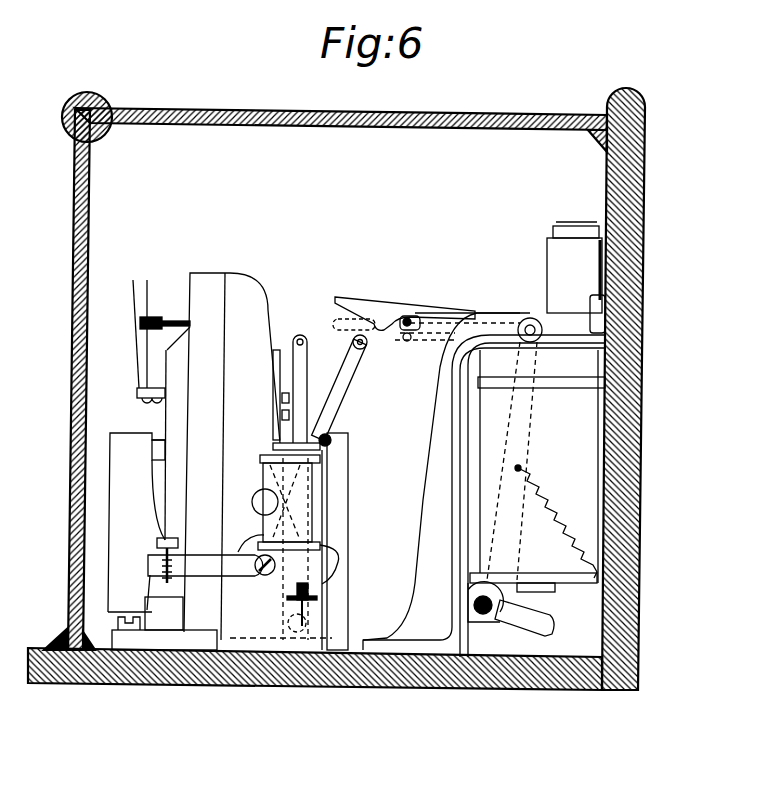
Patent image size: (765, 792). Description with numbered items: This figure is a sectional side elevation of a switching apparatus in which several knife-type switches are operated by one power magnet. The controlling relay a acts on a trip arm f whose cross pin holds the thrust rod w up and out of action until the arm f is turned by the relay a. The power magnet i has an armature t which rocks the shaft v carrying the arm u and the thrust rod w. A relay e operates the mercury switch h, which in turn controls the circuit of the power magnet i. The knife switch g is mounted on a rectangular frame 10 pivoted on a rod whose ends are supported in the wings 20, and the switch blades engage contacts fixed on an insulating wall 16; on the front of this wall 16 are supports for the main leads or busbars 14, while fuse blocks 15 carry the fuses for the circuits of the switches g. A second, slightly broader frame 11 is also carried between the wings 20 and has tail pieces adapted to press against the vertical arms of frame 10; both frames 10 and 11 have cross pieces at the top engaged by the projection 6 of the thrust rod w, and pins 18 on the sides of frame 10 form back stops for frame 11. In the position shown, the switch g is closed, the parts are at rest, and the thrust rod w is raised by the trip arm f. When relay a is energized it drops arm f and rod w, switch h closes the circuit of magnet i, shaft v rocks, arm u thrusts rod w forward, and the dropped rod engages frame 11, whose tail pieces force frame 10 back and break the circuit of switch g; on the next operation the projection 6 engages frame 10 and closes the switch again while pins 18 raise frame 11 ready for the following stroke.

The controlling relay a is at (585, 272).
The insulating wall 16 is at (203, 283).
The main leads or busbars 14 is at (150, 318).
The fuse blocks 15 is at (128, 482).
The wings 20 is at (248, 605).
The mercury switch h is at (148, 566).
The relay e is at (300, 498).
The pins 18 is at (333, 442).
The knife switch g is at (279, 348).
The rectangular frame 10 is at (299, 338).
The frame 11 is at (347, 372).
The projection 6 is at (377, 322).
The thrust rod w is at (407, 316).
The trip arm f is at (442, 328).
The arm u is at (497, 532).
The power magnet i is at (567, 483).
The shaft v is at (484, 614).
The armature t is at (540, 628).